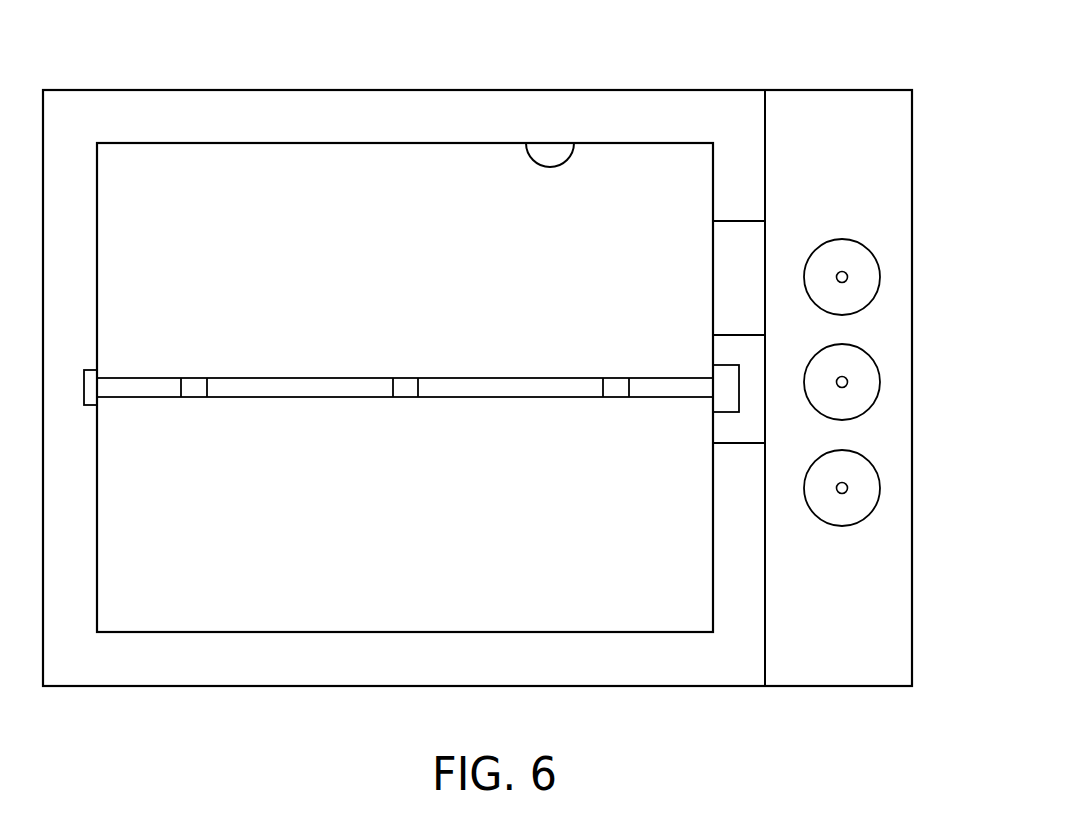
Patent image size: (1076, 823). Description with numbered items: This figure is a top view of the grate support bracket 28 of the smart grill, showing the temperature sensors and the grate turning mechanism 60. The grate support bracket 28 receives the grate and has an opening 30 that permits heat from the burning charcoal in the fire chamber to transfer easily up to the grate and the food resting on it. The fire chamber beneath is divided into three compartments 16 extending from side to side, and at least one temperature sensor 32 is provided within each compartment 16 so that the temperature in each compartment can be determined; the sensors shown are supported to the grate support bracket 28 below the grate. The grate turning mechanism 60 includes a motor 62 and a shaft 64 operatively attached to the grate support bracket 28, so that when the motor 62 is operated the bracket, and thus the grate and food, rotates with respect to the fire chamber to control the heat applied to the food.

The compartment 16 is at (206, 310).
The grate support bracket 28 is at (353, 127).
The opening 30 is at (572, 157).
The temperature sensor 32 is at (619, 393).
The grate turning mechanism 60 is at (955, 245).
The motor 62 is at (750, 384).
The shaft 64 is at (508, 392).